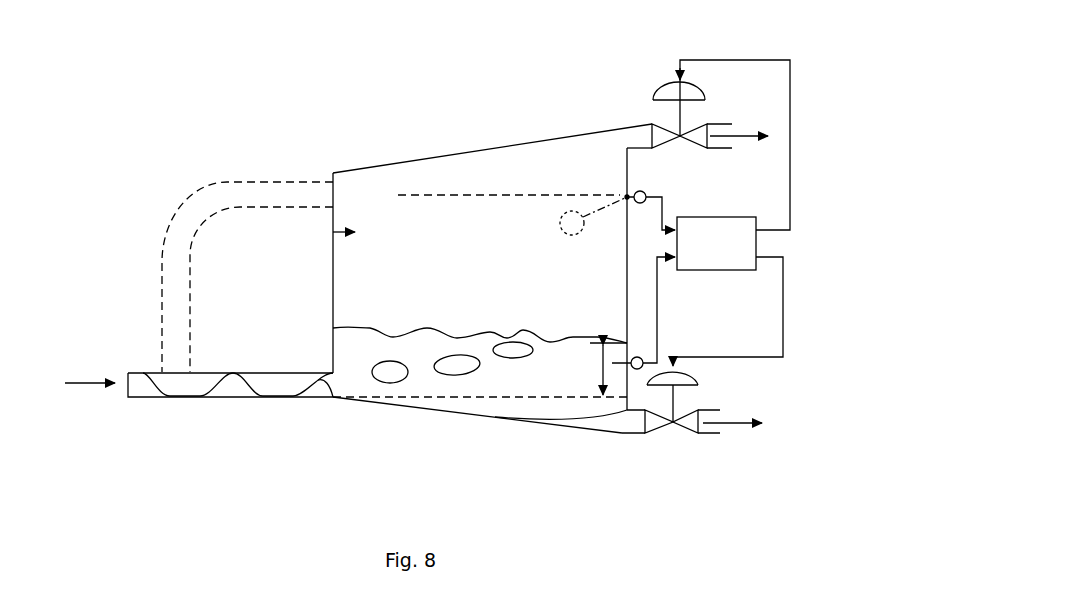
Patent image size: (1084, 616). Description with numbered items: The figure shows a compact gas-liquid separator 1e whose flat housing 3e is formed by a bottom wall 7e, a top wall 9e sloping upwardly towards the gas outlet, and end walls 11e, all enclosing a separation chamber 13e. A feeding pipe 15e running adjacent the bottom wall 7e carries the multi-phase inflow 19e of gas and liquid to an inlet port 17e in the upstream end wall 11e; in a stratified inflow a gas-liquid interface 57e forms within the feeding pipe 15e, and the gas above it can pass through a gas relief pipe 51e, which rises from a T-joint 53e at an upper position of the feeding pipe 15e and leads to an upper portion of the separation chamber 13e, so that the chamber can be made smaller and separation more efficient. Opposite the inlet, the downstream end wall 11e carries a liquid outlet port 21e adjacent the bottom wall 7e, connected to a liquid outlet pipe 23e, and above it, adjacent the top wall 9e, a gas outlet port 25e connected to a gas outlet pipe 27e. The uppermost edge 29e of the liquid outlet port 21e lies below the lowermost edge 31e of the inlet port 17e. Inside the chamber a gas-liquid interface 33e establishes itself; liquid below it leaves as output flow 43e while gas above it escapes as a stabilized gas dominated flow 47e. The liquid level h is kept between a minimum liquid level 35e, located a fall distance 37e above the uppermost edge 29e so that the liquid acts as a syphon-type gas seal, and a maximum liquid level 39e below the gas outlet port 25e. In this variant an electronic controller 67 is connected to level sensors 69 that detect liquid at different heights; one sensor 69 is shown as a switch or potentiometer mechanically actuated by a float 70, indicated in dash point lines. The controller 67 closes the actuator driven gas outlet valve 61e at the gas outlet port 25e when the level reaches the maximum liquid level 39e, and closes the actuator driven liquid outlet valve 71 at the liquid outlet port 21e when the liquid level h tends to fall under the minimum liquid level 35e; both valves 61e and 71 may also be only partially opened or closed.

The gas-liquid separator 1e is at (367, 110).
The flat housing 3e is at (422, 153).
The bottom wall 7e is at (473, 418).
The top wall 9e is at (477, 147).
The end walls 11e is at (333, 276).
The separation chamber 13e is at (333, 233).
The feeding pipe 15e is at (230, 398).
The inlet port 17e is at (325, 388).
The multi-phase inflow 19e is at (90, 383).
The liquid outlet port 21e is at (620, 429).
The liquid outlet pipe 23e is at (721, 408).
The gas outlet port 25e is at (632, 137).
The gas outlet pipe 27e is at (727, 124).
The uppermost edge 29e is at (551, 424).
The lowermost edge 31e is at (335, 395).
The gas-liquid interface 33e is at (390, 327).
The minimum liquid level 35e is at (519, 389).
The fall distance 37e is at (685, 374).
The maximum liquid level 39e is at (518, 200).
The output flow 43e is at (745, 421).
The gas dominated flow 47e is at (733, 132).
The gas relief pipe 51e is at (160, 275).
The T-joint 53e is at (158, 370).
The gas-liquid interface 57e is at (207, 380).
The gas outlet valve 61e is at (661, 70).
The electronic controller 67 is at (715, 263).
The level sensors 69 is at (646, 195).
The float 70 is at (573, 236).
The liquid outlet valve 71 is at (677, 441).
The liquid level h is at (601, 342).